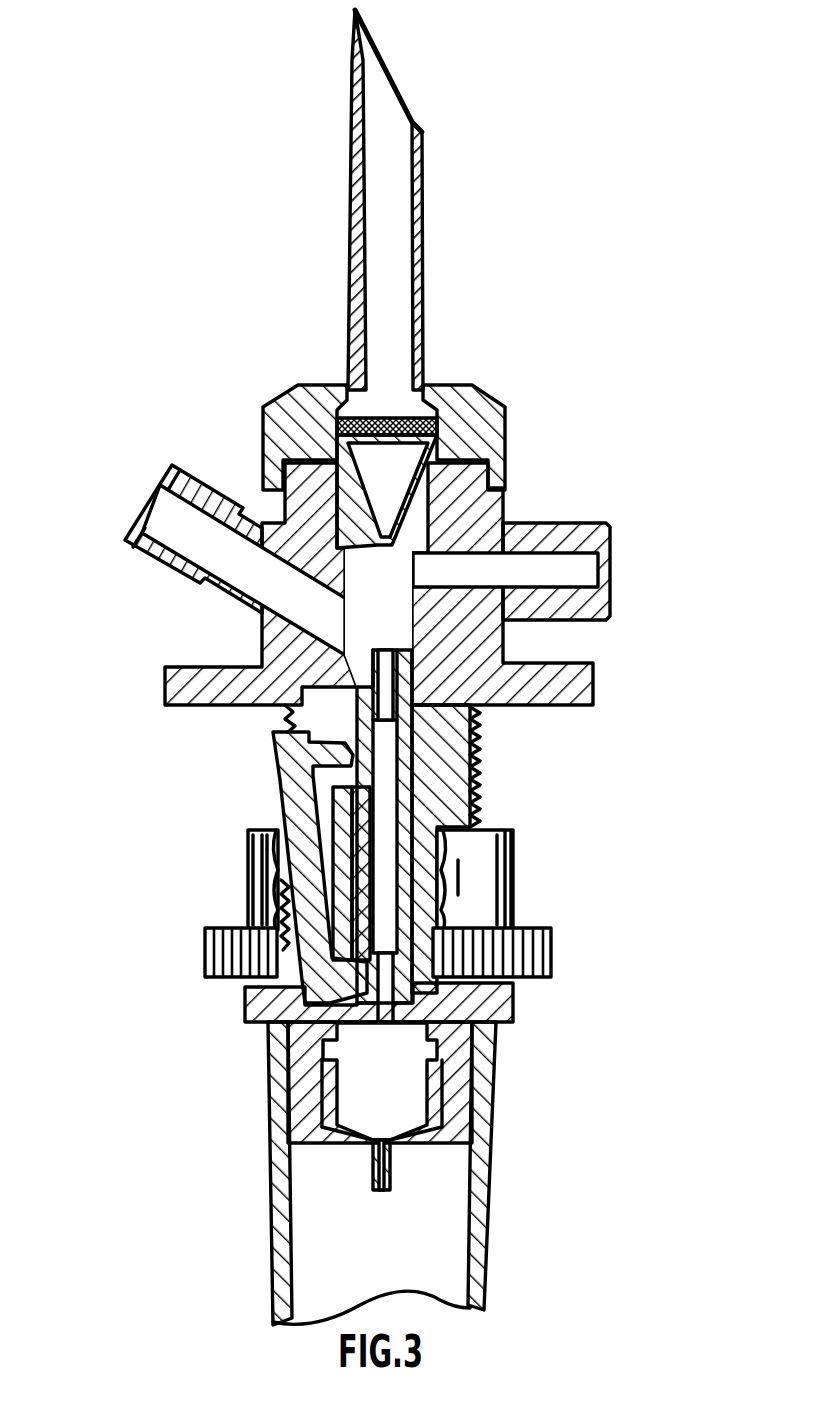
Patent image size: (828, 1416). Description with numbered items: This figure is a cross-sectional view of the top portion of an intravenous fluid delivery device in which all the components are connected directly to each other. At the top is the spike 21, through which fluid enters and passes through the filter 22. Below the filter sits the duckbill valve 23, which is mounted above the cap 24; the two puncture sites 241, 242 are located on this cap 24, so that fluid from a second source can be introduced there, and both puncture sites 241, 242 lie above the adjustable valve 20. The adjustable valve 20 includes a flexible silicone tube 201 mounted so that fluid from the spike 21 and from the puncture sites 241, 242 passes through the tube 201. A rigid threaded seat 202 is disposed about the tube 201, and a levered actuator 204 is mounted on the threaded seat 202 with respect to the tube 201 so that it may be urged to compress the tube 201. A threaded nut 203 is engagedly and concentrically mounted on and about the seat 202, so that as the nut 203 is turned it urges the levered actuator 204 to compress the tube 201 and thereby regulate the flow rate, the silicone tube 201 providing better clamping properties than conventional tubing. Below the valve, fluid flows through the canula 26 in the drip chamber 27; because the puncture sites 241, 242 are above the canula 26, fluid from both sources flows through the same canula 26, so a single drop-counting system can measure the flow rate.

The adjustable valve 20 is at (376, 667).
The spike 21 is at (482, 188).
The filter 22 is at (385, 427).
The duckbill valve 23 is at (428, 450).
The cap 24 is at (492, 510).
The puncture site 241 is at (612, 580).
The puncture site 242 is at (140, 503).
The flexible tube 201 is at (395, 768).
The rigid threaded seat 202 is at (478, 800).
The threaded nut 203 is at (551, 935).
The levered actuator 204 is at (278, 780).
The canula 26 is at (392, 1180).
The drip chamber 27 is at (268, 1178).